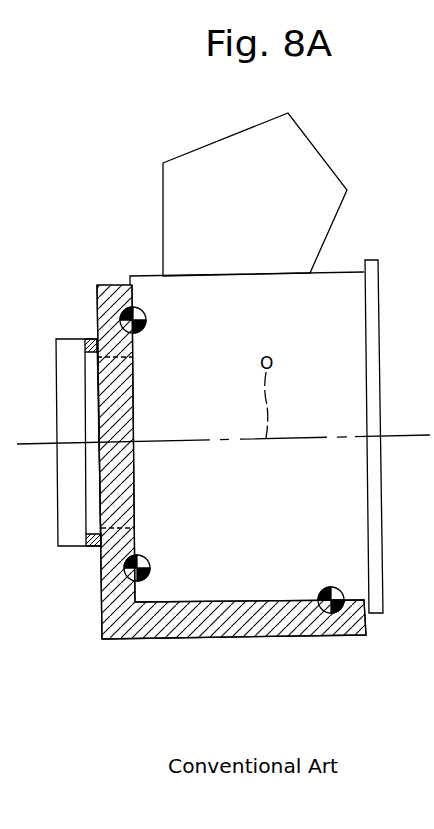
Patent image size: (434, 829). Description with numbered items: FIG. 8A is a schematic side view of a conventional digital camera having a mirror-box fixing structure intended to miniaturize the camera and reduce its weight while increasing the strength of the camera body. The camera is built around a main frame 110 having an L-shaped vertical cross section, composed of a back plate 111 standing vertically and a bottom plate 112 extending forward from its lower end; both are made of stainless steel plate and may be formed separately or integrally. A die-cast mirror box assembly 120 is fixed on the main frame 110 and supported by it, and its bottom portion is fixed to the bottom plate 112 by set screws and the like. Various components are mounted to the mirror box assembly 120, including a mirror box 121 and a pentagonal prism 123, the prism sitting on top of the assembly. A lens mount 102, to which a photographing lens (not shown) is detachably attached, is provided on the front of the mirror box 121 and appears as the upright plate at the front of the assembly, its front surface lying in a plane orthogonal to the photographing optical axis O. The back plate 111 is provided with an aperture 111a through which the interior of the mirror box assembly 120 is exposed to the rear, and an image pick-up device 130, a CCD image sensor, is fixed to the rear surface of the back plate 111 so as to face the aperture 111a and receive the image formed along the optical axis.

The main frame 110 is at (207, 489).
The back plate 111 is at (103, 563).
The aperture 111a is at (121, 359).
The bottom plate 112 is at (328, 612).
The mirror box assembly 120 is at (261, 199).
The mirror box 121 is at (352, 460).
The pentagonal prism 123 is at (320, 178).
The lens mount 102 is at (371, 333).
The image pick-up device 130 is at (67, 333).